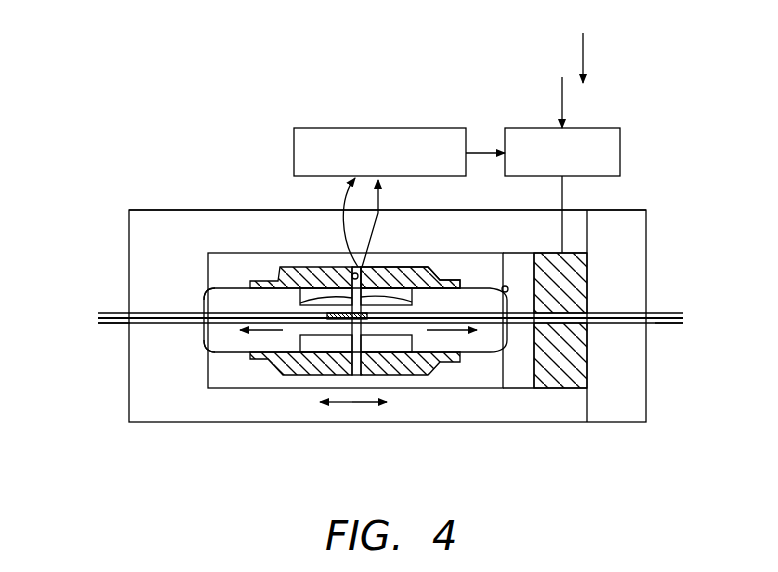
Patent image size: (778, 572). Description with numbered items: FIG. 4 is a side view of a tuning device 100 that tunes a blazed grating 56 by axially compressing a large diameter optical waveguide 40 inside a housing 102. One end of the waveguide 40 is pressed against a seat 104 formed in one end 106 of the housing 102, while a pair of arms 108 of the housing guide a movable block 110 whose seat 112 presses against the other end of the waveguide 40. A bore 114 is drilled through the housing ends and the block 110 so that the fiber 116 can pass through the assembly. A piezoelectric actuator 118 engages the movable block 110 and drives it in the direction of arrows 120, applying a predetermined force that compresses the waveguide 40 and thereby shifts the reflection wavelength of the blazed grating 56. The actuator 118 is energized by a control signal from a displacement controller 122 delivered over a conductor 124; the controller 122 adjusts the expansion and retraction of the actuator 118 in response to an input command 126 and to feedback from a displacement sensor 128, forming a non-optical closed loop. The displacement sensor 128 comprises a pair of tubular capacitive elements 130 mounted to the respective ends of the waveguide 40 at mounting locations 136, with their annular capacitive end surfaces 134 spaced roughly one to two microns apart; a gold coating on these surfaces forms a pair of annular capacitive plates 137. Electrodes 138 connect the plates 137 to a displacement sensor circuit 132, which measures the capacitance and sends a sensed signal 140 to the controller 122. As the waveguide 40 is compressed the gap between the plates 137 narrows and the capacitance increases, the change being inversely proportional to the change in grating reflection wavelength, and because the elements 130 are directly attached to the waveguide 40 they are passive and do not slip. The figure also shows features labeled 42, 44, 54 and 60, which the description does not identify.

The tuning device 100 is at (237, 105).
The housing 102 is at (178, 207).
The seat 104 is at (200, 297).
The end of the housing 106 is at (138, 267).
The arms 108 is at (545, 237).
The movable block 110 is at (525, 262).
The seat 112 is at (503, 288).
The bore 114 is at (160, 322).
The fiber 116 is at (130, 313).
The actuator 118 is at (578, 297).
The arrows 120 is at (350, 403).
The controller 122 is at (605, 128).
The conductor 124 is at (562, 198).
The input command 126 is at (583, 45).
The displacement sensor 128 is at (405, 260).
The capacitive elements 130 is at (300, 265).
The displacement sensor circuit 132 is at (334, 128).
The annular capacitive end surface 134 is at (300, 303).
The mounting location 136 is at (265, 362).
The annular capacitive plates 137 is at (364, 267).
The electrodes 138 is at (343, 200).
The sensed signal 140 is at (482, 150).
The large diameter optical waveguide 40 is at (218, 280).
The cylinder 42 is at (247, 312).
The piston skirt 44 is at (220, 345).
The rod motion arrow 54 is at (120, 327).
The blazed grating 56 is at (372, 322).
The piston motion arrow 60 is at (457, 333).